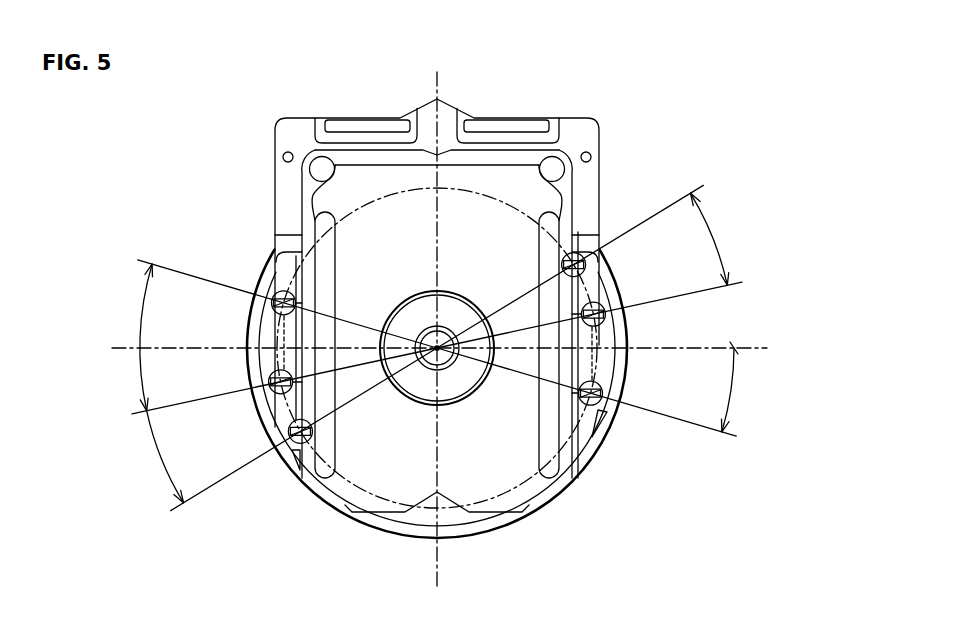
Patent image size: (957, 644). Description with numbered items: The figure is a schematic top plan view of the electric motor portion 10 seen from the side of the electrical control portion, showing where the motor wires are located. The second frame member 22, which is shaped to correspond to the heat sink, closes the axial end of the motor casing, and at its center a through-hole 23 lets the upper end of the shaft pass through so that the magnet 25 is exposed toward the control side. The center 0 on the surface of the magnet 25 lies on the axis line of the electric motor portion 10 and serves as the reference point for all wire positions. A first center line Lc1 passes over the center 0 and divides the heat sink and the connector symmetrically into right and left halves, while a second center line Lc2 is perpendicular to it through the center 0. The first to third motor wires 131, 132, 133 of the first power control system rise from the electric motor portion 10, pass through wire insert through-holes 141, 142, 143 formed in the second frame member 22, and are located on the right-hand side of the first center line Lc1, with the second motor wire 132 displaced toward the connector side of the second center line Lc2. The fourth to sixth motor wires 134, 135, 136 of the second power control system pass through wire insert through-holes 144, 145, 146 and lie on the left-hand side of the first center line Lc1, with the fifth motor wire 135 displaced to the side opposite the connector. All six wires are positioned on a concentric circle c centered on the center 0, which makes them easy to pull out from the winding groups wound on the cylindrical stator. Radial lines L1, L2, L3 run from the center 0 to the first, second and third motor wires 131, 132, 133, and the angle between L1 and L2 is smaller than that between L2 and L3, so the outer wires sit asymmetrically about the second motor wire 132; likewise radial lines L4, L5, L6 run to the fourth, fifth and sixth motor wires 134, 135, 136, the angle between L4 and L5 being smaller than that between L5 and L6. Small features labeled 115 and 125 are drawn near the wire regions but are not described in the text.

The second frame member 22 is at (586, 140).
The electric motor portion 10 is at (335, 520).
The through-hole 23 is at (478, 376).
The magnet 25 is at (446, 368).
The center 0 is at (435, 352).
The concentric circle c is at (495, 508).
The first center line Lc1 is at (441, 82).
The second center line Lc2 is at (757, 345).
The straight line L1 is at (656, 212).
The straight line L2 is at (741, 283).
The straight line L3 is at (735, 438).
The straight line L4 is at (172, 506).
The straight line L5 is at (134, 413).
The straight line L6 is at (140, 258).
The first motor wire 131 is at (566, 256).
The second motor wire 132 is at (596, 302).
The third motor wire 133 is at (602, 385).
The fourth motor wire 134 is at (288, 430).
The fifth motor wire 135 is at (269, 380).
The sixth motor wire 136 is at (282, 291).
The wire insert through-hole 141 is at (585, 265).
The wire insert through-hole 142 is at (604, 317).
The wire insert through-hole 143 is at (601, 399).
The wire insert through-hole 144 is at (291, 437).
The wire insert through-hole 145 is at (269, 384).
The wire insert through-hole 146 is at (272, 302).
The rib 115 is at (600, 420).
The rib 125 is at (296, 450).